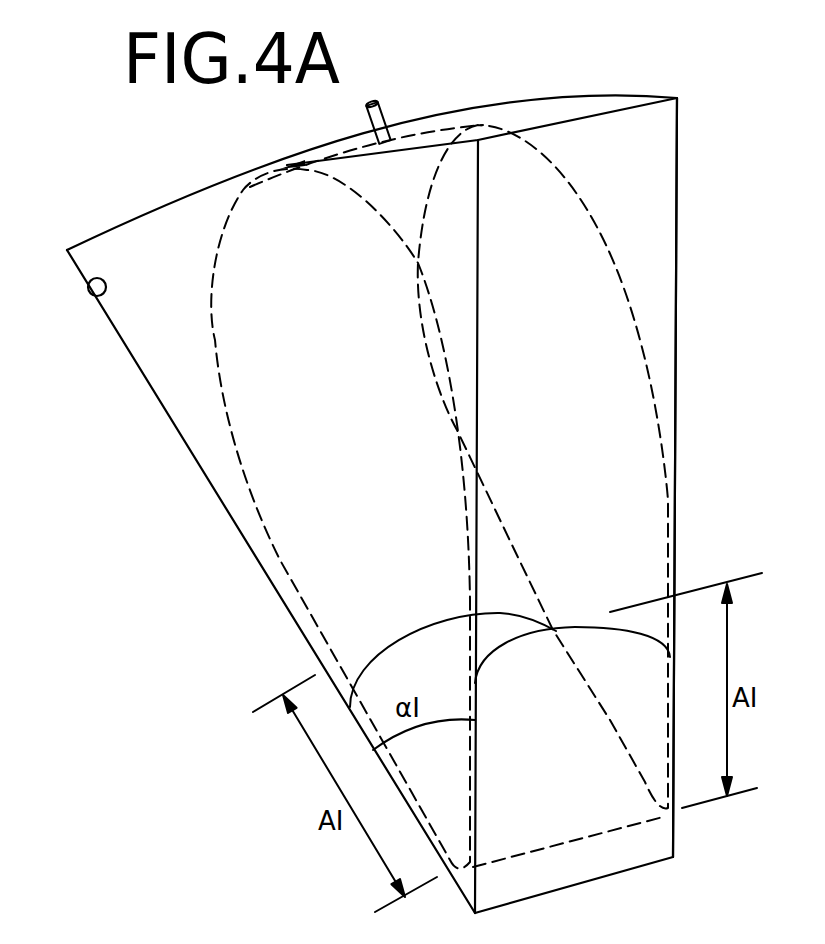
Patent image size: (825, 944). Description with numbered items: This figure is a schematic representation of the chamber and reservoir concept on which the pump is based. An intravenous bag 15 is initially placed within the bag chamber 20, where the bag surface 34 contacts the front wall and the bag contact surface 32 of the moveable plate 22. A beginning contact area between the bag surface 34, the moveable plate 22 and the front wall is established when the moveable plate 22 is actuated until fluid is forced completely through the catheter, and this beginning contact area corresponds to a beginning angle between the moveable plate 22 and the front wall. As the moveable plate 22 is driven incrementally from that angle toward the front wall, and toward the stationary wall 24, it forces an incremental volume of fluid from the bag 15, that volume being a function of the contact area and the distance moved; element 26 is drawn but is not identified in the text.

The intravenous bag 15 is at (585, 333).
The bag chamber 20 is at (172, 220).
The moveable plate 22 is at (187, 448).
The stationary wall 24 is at (677, 498).
The hidden internal cavity 26 is at (418, 263).
The bag contact surface 32 is at (88, 292).
The bag surface 34 is at (243, 197).